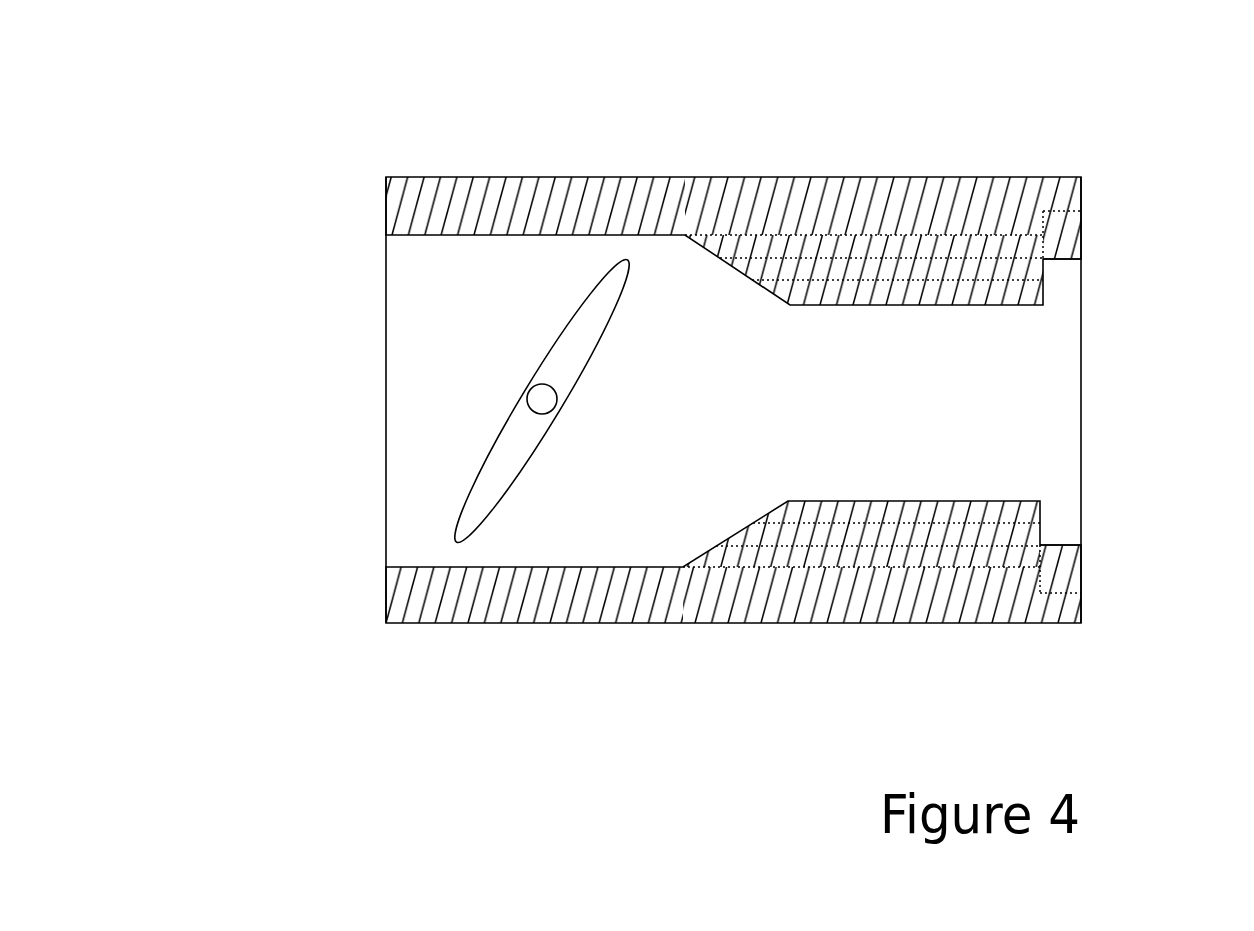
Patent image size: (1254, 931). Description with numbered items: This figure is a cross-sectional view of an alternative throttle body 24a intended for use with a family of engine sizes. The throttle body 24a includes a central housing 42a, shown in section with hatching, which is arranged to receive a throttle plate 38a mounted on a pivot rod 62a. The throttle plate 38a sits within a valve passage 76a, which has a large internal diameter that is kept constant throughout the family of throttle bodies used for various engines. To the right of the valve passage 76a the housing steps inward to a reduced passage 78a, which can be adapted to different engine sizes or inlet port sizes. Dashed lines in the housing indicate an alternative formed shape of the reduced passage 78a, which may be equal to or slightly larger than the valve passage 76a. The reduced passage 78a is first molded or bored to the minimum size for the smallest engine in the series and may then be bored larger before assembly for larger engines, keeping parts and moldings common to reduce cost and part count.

The throttle body 24a is at (362, 722).
The throttle plate 38a is at (503, 450).
The central housing 42a is at (590, 608).
The pivot rod 62a is at (540, 399).
The valve passage 76a is at (510, 289).
The reduced passage 78a is at (1008, 369).